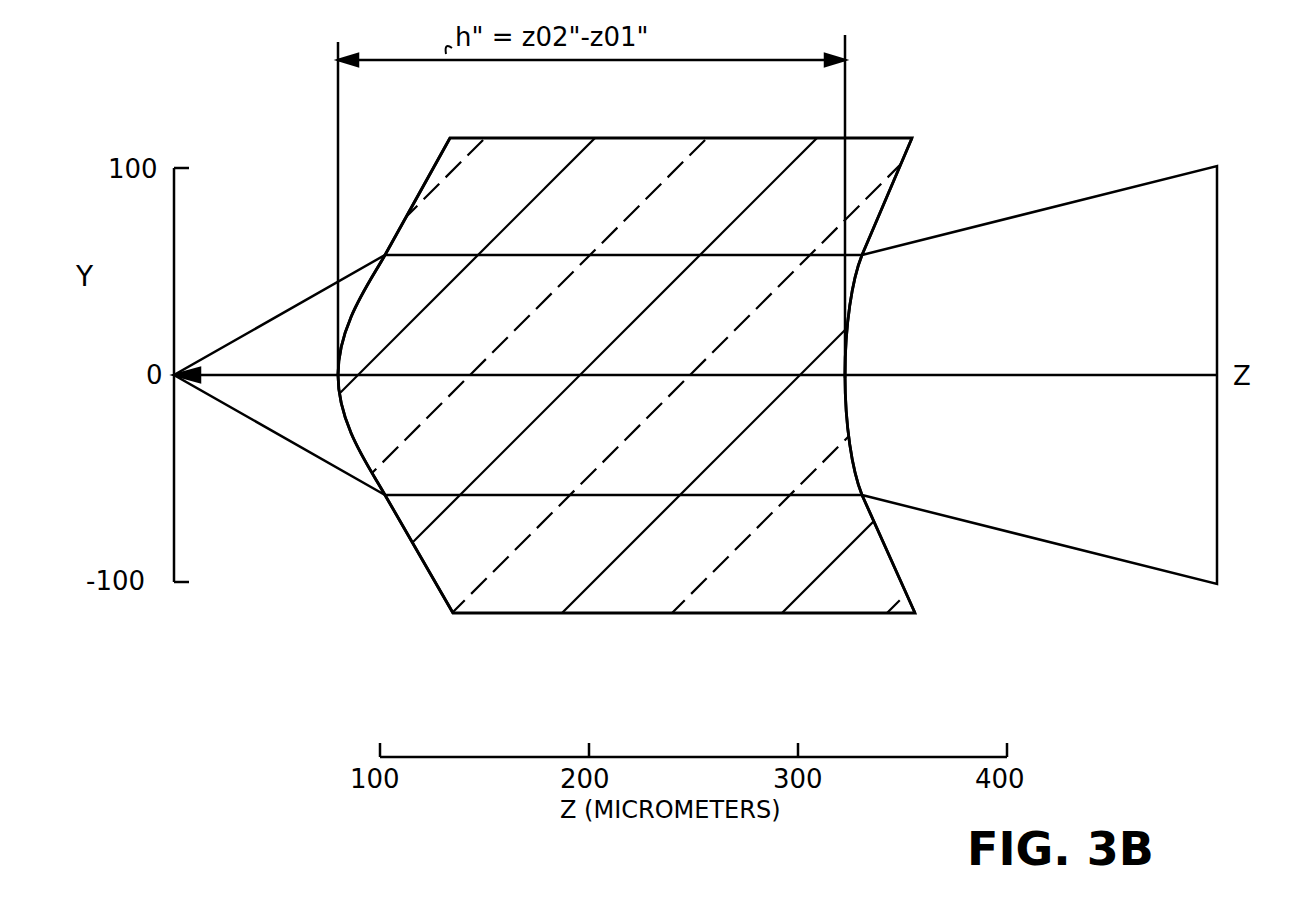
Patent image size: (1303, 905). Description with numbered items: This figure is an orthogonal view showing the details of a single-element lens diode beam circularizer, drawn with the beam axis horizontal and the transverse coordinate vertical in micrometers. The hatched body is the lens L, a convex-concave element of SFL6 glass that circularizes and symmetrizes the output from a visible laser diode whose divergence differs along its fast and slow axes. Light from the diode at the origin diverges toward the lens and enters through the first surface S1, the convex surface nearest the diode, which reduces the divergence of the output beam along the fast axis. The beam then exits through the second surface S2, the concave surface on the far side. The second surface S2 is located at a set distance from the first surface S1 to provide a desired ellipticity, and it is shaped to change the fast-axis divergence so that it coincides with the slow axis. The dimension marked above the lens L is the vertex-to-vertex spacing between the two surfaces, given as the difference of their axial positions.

The lens L is at (651, 400).
The first surface S1 is at (394, 381).
The second surface S2 is at (908, 375).